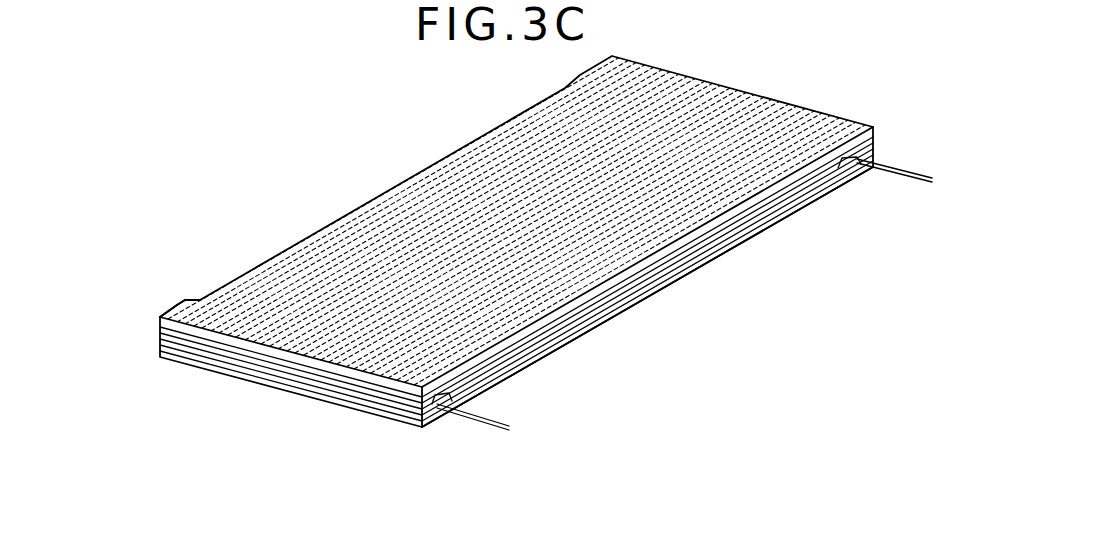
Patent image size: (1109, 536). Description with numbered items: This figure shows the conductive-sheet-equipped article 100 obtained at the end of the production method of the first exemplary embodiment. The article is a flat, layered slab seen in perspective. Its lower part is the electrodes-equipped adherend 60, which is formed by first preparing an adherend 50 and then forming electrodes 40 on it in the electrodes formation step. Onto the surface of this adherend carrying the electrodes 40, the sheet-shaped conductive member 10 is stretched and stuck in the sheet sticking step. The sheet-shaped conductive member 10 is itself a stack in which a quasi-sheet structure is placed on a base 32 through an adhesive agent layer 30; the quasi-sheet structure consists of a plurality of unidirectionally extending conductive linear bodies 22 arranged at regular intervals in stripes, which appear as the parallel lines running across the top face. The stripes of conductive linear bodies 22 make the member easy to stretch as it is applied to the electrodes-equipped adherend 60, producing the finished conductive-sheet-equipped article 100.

The conductive-sheet-equipped article 100 is at (376, 186).
The sheet-shaped conductive member 10 is at (152, 329).
The conductive linear body 22 is at (851, 140).
The adhesive agent layer 30 is at (394, 396).
The base 32 is at (176, 303).
The electrodes 40 is at (387, 412).
The adherend 50 is at (604, 320).
The electrodes-equipped adherend 60 is at (594, 345).